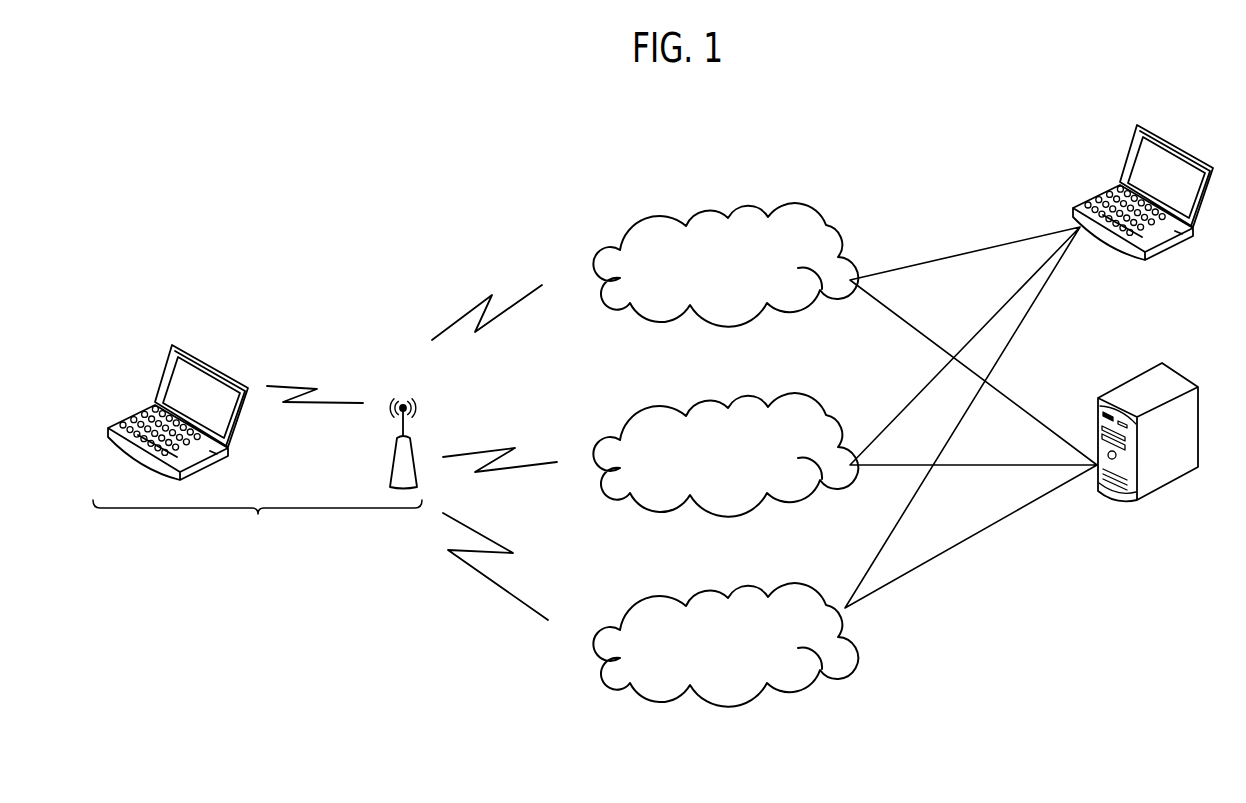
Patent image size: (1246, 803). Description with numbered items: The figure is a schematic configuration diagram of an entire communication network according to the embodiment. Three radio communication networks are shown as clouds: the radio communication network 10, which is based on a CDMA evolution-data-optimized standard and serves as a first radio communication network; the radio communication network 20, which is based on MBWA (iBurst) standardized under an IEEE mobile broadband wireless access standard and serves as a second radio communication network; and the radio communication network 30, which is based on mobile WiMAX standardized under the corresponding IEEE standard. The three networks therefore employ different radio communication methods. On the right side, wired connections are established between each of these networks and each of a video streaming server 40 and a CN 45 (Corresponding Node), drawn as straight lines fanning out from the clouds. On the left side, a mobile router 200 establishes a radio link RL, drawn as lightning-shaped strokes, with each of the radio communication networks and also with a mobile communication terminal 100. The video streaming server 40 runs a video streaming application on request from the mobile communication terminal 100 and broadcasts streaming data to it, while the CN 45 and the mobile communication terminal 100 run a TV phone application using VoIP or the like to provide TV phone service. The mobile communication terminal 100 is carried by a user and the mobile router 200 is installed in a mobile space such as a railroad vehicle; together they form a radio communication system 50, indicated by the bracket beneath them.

The radio communication network 10 is at (755, 207).
The radio communication network 20 is at (754, 397).
The radio communication network 30 is at (754, 587).
The video streaming server 40 is at (1175, 370).
The CN (Corresponding Node) 45 is at (1175, 146).
The radio communication system 50 is at (257, 522).
The mobile communication terminal 100 is at (214, 364).
The mobile router 200 is at (390, 460).
The radio link RL is at (322, 402).